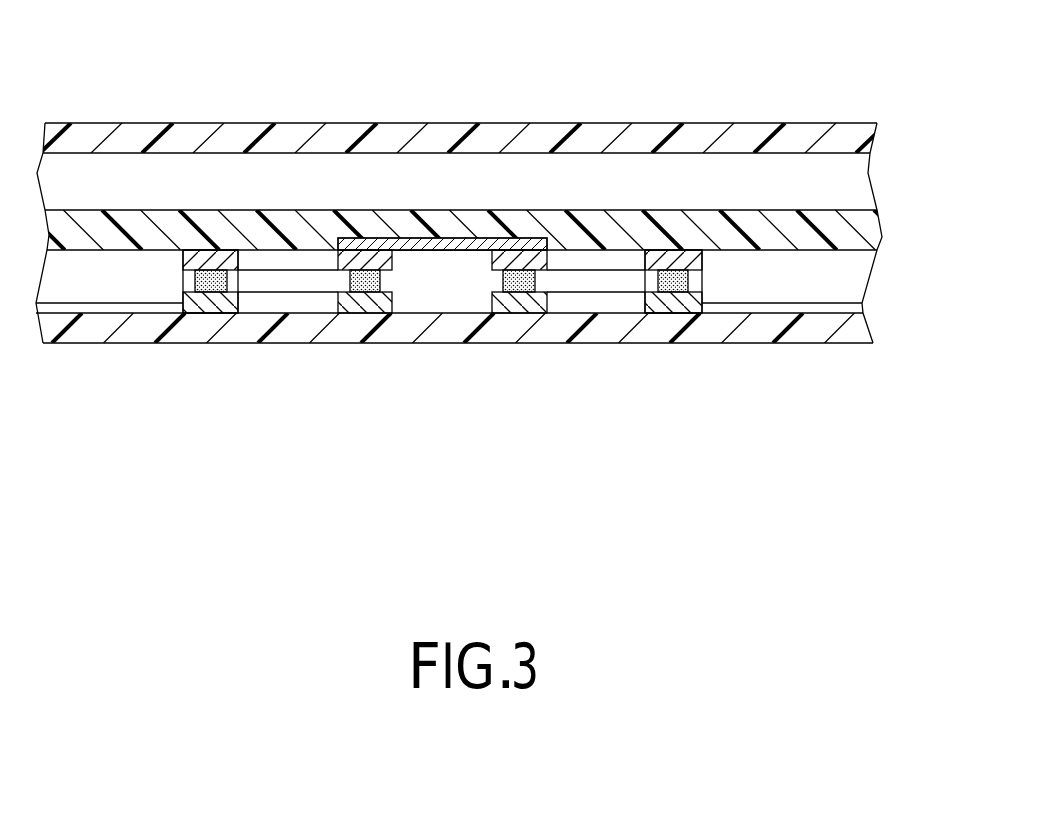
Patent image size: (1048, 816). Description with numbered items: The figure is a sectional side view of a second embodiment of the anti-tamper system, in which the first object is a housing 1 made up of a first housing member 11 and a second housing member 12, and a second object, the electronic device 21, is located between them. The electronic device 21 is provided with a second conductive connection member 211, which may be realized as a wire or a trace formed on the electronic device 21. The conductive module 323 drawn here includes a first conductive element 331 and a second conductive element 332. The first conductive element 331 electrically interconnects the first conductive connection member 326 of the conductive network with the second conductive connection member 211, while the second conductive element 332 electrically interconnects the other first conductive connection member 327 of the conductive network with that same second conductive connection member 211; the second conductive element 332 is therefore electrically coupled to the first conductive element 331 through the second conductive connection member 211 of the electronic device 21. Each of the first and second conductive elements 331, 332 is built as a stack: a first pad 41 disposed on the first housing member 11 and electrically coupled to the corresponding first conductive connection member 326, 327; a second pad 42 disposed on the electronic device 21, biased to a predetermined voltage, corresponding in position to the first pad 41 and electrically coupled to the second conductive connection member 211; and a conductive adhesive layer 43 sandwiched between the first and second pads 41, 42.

The housing 1 is at (535, 204).
The first housing member 11 is at (513, 335).
The second housing member 12 is at (872, 137).
The electronic device 21 is at (645, 230).
The second conductive connection member 211 is at (455, 243).
The first pad 41 is at (213, 310).
The second pad 42 is at (235, 260).
The conductive adhesive layer 43 is at (227, 282).
The conductive module 323 is at (476, 404).
The first conductive connection member 326 is at (95, 310).
The first conductive connection member 327 is at (803, 310).
The first conductive element 331 is at (312, 426).
The second conductive element 332 is at (707, 365).